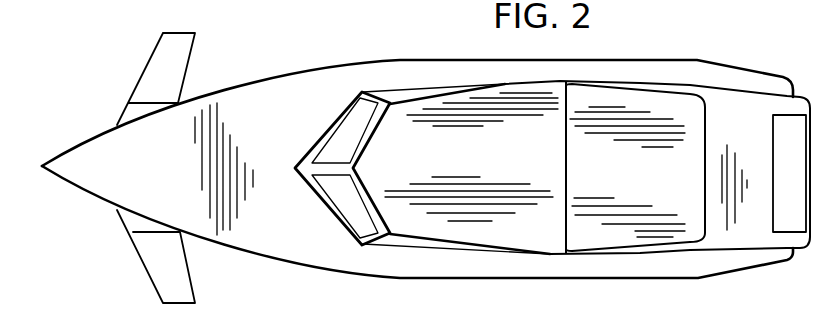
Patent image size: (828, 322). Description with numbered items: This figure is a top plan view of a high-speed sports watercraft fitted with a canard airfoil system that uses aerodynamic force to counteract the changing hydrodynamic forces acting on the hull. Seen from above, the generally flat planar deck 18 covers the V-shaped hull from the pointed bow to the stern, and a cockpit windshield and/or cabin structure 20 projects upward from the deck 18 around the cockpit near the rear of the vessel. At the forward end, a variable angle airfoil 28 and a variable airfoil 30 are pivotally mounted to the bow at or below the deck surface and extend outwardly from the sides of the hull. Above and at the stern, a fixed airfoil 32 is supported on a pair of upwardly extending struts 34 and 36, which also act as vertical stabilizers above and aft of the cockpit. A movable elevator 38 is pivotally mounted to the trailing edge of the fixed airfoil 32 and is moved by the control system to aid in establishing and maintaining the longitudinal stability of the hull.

The deck 18 is at (262, 110).
The cockpit windshield and/or cabin structure 20 is at (345, 185).
The variable angle airfoil 28 is at (157, 272).
The variable airfoil 30 is at (165, 58).
The fixed airfoil 32 is at (727, 167).
The strut 34 is at (693, 247).
The strut 36 is at (713, 94).
The movable elevator 38 is at (779, 157).